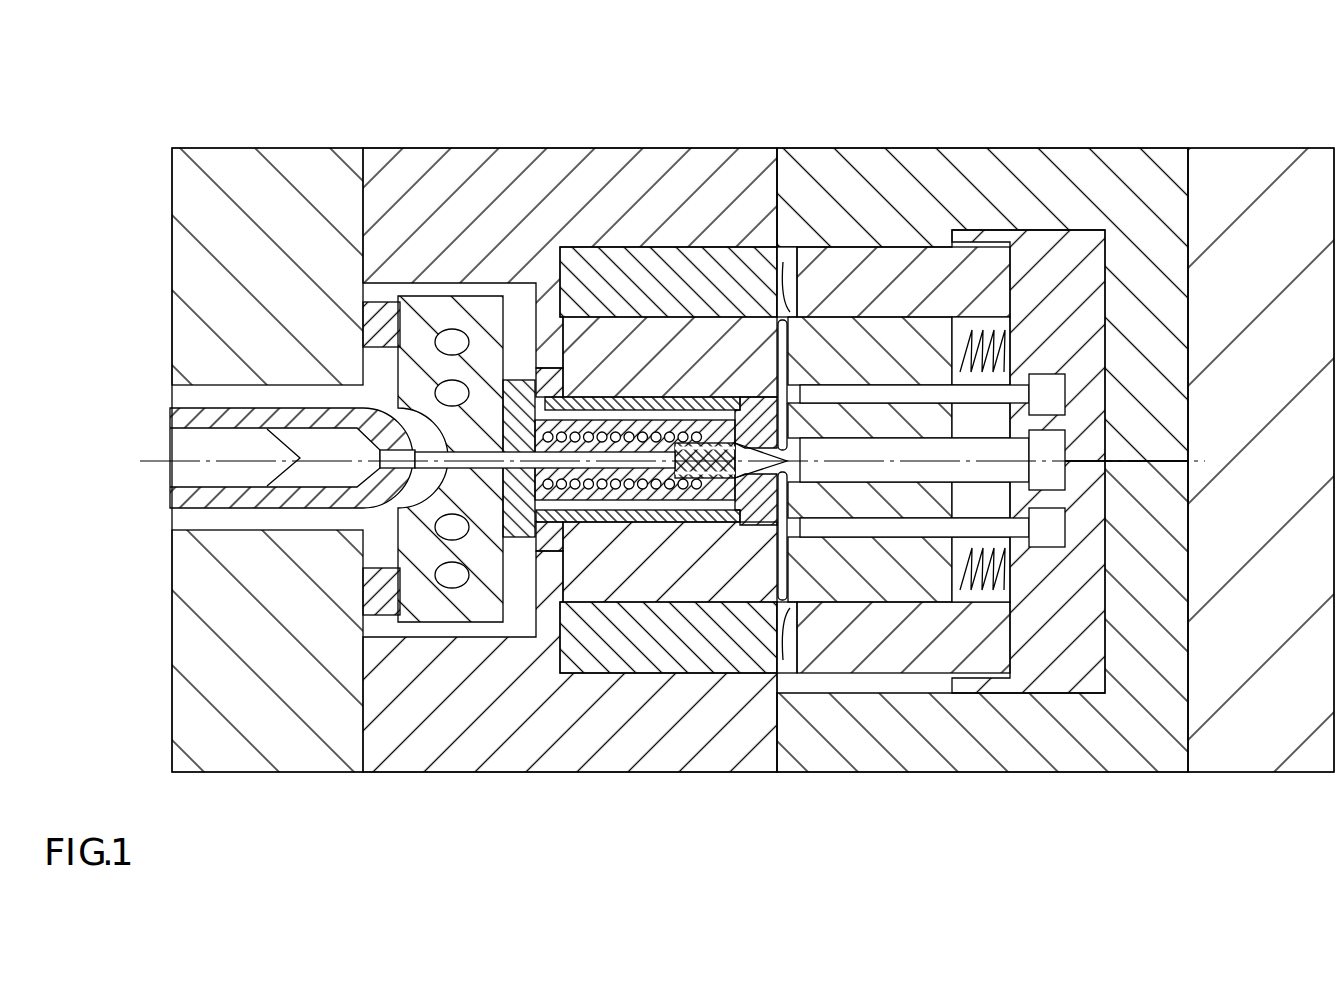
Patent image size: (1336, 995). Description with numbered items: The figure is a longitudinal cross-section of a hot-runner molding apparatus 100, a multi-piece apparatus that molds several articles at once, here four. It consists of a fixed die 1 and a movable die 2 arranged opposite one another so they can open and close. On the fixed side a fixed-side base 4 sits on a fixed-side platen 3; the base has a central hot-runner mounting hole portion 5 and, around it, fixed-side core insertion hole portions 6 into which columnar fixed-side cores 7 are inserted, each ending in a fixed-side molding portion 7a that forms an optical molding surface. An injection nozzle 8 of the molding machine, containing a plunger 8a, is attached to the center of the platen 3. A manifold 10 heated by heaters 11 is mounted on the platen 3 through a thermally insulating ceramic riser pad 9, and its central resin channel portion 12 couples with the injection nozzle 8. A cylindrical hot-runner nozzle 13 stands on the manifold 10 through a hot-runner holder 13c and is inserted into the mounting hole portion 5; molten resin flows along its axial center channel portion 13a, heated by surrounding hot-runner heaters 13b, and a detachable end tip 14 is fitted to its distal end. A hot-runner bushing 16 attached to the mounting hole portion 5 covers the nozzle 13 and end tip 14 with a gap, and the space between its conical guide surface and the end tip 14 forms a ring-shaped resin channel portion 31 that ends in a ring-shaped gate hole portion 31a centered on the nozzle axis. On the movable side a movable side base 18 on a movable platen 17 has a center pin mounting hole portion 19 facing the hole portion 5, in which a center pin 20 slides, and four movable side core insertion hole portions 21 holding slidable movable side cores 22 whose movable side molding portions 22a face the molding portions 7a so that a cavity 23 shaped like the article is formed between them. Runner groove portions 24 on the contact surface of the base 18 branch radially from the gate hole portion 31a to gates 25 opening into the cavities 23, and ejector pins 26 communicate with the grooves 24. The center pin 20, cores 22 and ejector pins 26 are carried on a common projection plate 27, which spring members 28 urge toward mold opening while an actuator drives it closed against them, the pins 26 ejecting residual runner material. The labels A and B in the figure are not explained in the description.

The hot-runner molding apparatus 100 is at (800, 67).
The fixed die 1 is at (625, 112).
The movable die 2 is at (1125, 118).
The fixed-side platen 3 is at (252, 165).
The fixed-side base 4 is at (555, 160).
The hot-runner mounting hole portion 5 is at (592, 503).
The fixed-side core insertion hole portions 6 is at (598, 250).
The fixed-side cores 7 is at (687, 267).
The fixed-side molding portion 7a is at (765, 317).
The injection nozzle 8 is at (203, 408).
The plunger 8a is at (218, 484).
The riser pad 9 is at (388, 603).
The manifold 10 is at (445, 310).
The heaters 11 is at (453, 540).
The resin channel portion 12 is at (417, 430).
The hot-runner nozzle 13 is at (665, 498).
The axial center channel portion 13a is at (530, 462).
The hot-runner heaters 13b is at (643, 500).
The hot-runner holder 13c is at (520, 387).
The end tip 14 is at (732, 502).
The hot-runner bushing 16 is at (587, 602).
The movable platen 17 is at (1254, 165).
The movable side base 18 is at (1082, 165).
The center pin mounting hole portion 19 is at (870, 520).
The center pin 20 is at (860, 405).
The movable side core insertion hole portions 21 is at (905, 280).
The movable side cores 22 is at (945, 390).
The movable side molding portion 22a is at (787, 300).
The cavity 23 is at (800, 290).
The runner groove portions 24 is at (818, 440).
The gates 25 is at (733, 307).
The ejector pins 26 is at (978, 323).
The projection plate 27 is at (1085, 660).
The spring members 28 is at (1005, 330).
The ring-shaped resin channel portion 31 is at (775, 470).
The ring-shaped gate hole portion 31a is at (790, 462).
The region A is at (770, 565).
The region B is at (770, 362).